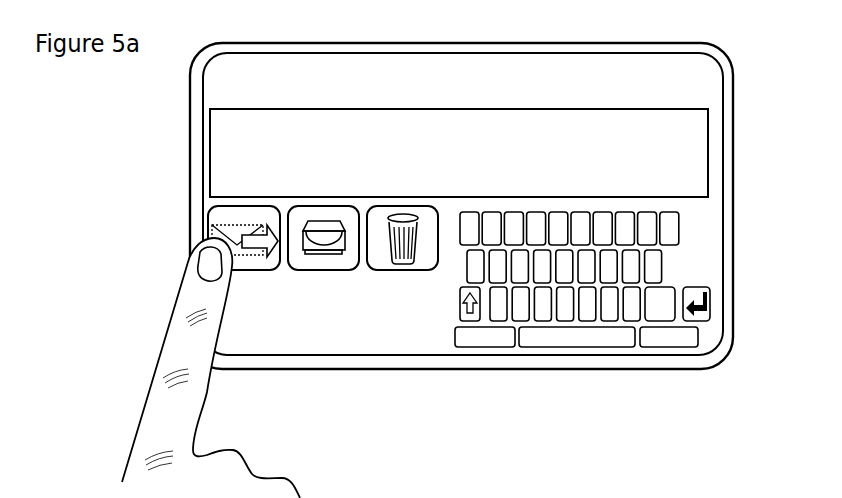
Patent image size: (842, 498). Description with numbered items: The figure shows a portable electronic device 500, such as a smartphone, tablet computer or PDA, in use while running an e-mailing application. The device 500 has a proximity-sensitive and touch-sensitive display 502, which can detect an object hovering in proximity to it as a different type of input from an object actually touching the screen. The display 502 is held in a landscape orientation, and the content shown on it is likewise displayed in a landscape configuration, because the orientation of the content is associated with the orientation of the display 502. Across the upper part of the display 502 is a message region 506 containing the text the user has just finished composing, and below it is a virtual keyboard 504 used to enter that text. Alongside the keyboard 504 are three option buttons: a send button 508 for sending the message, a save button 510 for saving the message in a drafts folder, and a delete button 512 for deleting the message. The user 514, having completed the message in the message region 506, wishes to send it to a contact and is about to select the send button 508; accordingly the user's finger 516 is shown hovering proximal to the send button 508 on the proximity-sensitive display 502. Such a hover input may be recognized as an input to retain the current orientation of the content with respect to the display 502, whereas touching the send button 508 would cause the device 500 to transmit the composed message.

The portable electronic device 500 is at (439, 228).
The proximity-sensitive and touch-sensitive display 502 is at (201, 88).
The virtual keyboard 504 is at (667, 272).
The message region 506 is at (210, 147).
The send button 508 is at (247, 270).
The save button 510 is at (342, 272).
The delete button 512 is at (417, 272).
The user 514 is at (215, 487).
The finger 516 is at (197, 265).